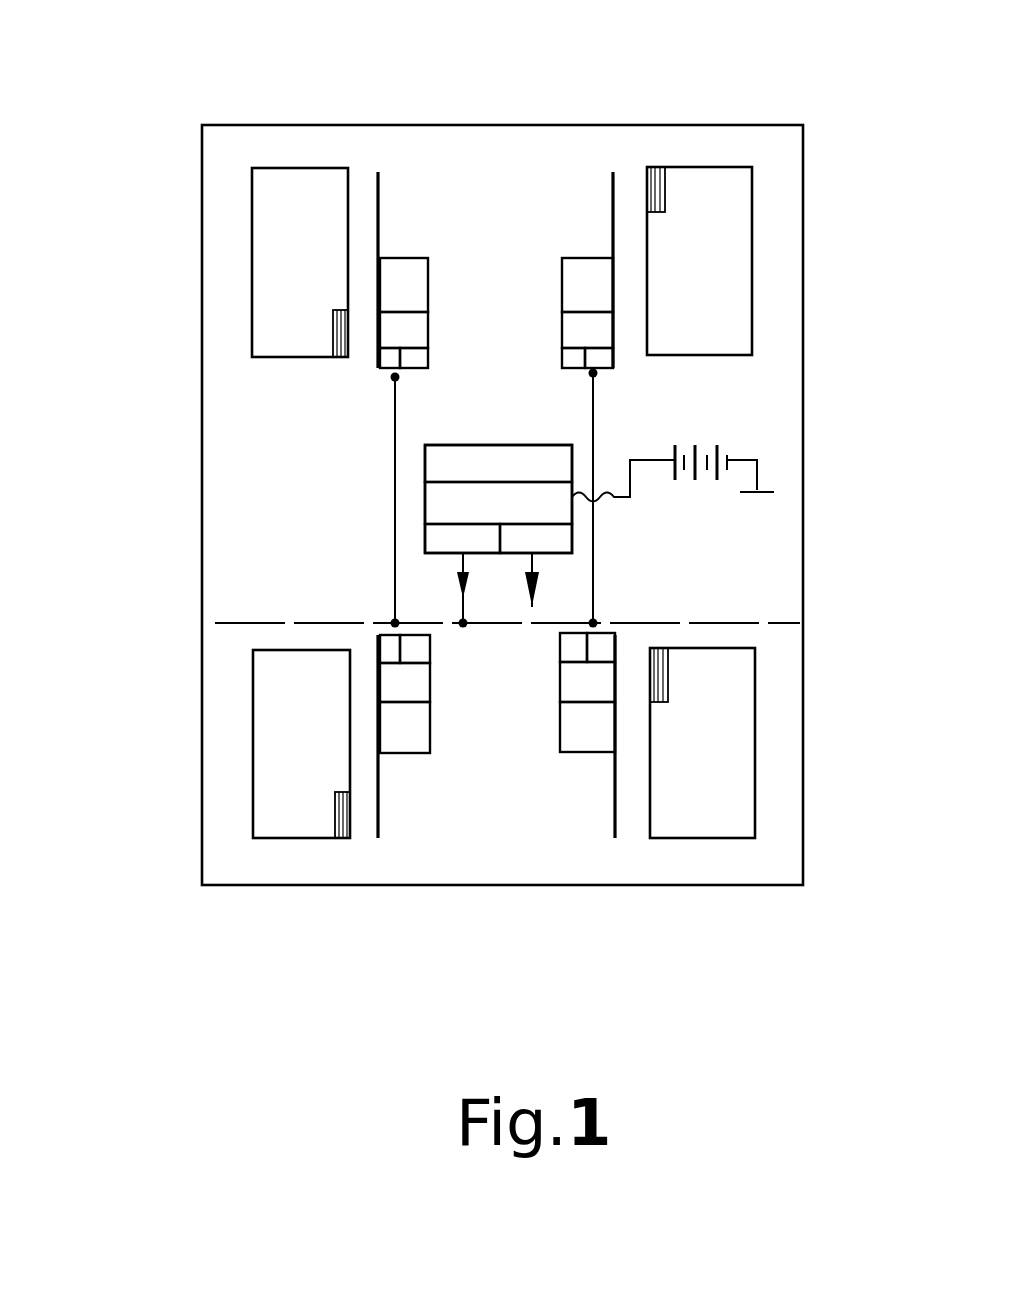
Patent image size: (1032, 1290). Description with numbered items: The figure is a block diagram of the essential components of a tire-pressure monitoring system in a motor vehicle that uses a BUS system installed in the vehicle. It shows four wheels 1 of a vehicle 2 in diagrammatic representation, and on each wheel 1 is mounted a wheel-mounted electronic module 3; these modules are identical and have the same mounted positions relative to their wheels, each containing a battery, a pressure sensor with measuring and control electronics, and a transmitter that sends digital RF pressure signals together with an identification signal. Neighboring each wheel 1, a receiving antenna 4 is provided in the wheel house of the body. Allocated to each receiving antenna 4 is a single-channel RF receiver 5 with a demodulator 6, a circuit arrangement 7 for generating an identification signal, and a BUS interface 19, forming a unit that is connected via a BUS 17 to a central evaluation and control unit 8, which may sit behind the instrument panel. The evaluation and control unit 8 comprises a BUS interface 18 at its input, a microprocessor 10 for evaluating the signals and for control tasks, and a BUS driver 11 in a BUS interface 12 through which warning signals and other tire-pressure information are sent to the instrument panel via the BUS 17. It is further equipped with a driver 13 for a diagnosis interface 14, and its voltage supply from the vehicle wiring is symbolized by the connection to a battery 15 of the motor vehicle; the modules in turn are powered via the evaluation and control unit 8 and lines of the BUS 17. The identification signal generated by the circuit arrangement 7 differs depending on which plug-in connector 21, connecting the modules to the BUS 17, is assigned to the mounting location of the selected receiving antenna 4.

The wheel 1 is at (267, 225).
The vehicle 2 is at (202, 440).
The wheel-mounted electronic module 3 is at (333, 328).
The receiving antenna 4 is at (385, 200).
The RF receiver 5 is at (497, 505).
The demodulator 6 is at (497, 507).
The circuit arrangement 7 is at (420, 358).
The central evaluation and control unit 8 is at (435, 497).
The microprocessor 10 is at (498, 503).
The BUS driver 11 is at (447, 540).
The BUS interface 12 is at (458, 588).
The driver 13 is at (556, 540).
The diagnosis interface 14 is at (532, 565).
The battery 15 is at (722, 450).
The BUS 17 is at (276, 620).
The BUS interface 18 is at (498, 463).
The BUS interface 19 is at (383, 368).
The plug-in connector 21 is at (397, 377).